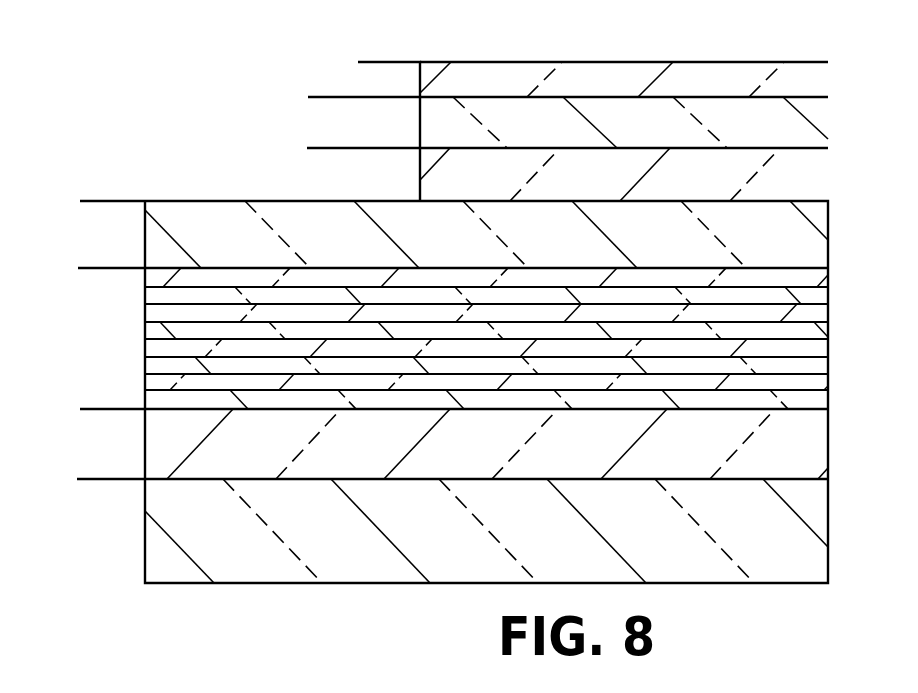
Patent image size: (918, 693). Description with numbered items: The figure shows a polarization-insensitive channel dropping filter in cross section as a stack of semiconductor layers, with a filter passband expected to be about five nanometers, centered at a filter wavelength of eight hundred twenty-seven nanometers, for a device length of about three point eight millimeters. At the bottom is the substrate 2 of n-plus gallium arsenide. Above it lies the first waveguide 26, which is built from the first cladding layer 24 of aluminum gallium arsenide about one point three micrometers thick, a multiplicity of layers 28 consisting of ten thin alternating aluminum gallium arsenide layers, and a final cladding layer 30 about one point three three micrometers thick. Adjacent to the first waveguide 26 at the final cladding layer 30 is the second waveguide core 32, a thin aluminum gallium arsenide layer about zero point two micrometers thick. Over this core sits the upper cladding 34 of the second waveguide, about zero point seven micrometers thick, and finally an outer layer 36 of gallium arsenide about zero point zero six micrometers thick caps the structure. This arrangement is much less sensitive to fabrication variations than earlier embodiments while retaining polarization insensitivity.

The substrate 2 is at (788, 556).
The first cladding layer 24 is at (92, 409).
The first waveguide 26 is at (52, 190).
The multiplicity of layers 28 is at (133, 340).
The final cladding layer 30 is at (91, 201).
The second waveguide core 32 is at (319, 201).
The upper cladding 34 is at (319, 148).
The outer layer 36 is at (368, 128).